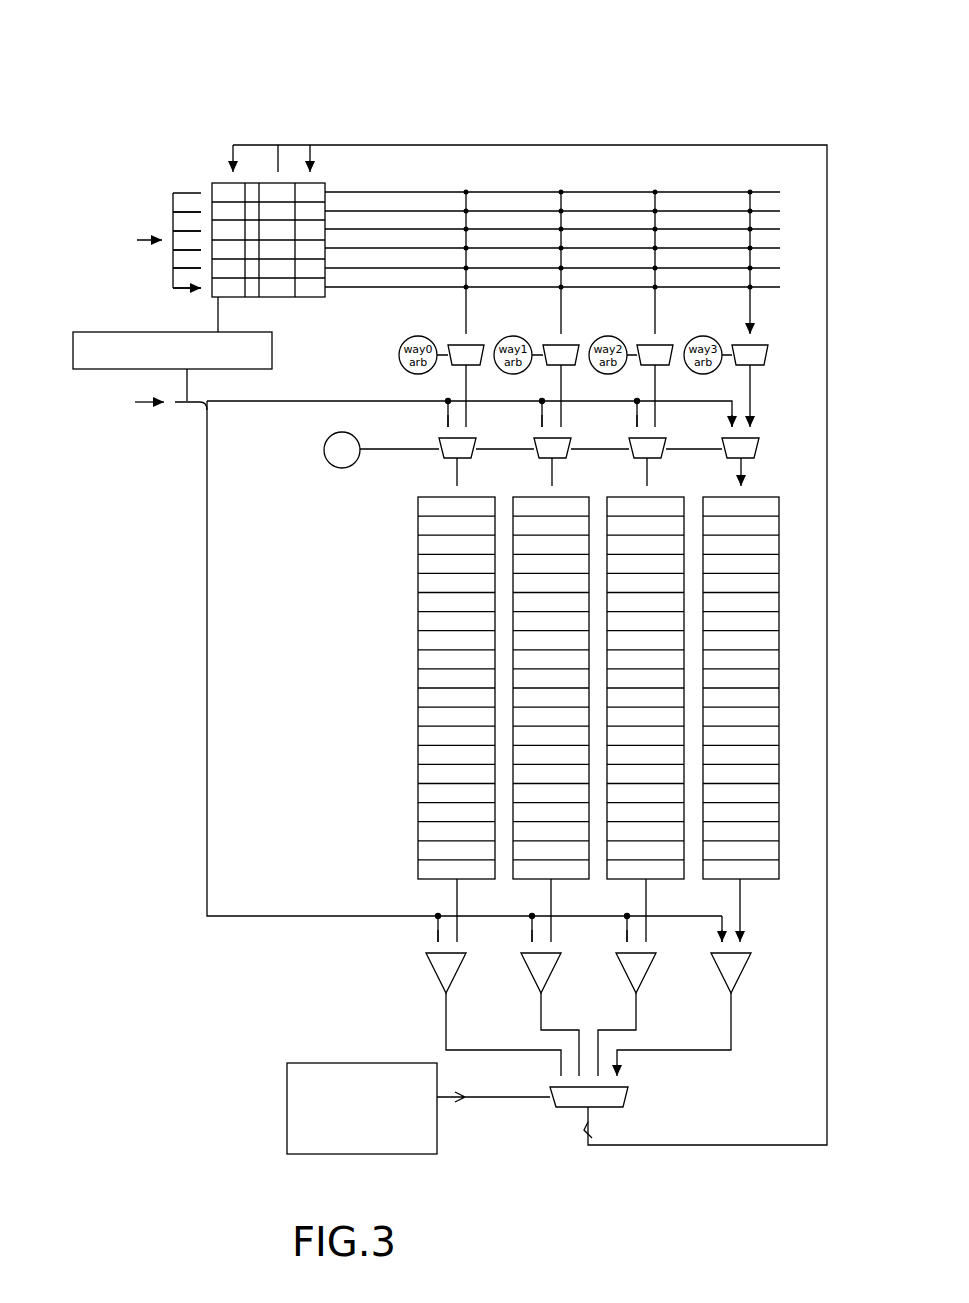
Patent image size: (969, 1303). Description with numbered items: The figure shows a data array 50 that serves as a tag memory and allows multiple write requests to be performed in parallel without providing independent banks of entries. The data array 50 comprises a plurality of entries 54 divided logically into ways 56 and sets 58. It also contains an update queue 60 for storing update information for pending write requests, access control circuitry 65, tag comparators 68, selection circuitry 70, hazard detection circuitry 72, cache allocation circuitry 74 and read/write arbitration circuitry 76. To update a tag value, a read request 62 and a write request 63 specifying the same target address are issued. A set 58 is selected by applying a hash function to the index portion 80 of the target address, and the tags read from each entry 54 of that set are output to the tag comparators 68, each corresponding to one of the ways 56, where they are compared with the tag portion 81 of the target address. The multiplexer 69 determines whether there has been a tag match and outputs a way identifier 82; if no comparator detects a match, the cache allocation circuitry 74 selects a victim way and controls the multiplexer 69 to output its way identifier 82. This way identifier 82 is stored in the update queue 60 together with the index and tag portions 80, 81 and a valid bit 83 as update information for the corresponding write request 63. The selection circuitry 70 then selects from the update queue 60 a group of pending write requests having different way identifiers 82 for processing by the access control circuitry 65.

The data array 50 is at (773, 86).
The entries 54 is at (593, 676).
The ways 56 is at (712, 495).
The sets 58 is at (765, 530).
The update queue 60 is at (213, 183).
The read request 62 is at (145, 410).
The write request 63 is at (141, 238).
The access control circuitry 65 is at (724, 447).
The tag comparators 68 is at (736, 968).
The multiplexer 69 is at (628, 1097).
The selection circuitry 70 is at (760, 342).
The hazard detection circuitry 72 is at (73, 351).
The cache allocation circuitry 74 is at (287, 1095).
The read/write arbitration circuitry 76 is at (330, 466).
The index portion 80 is at (284, 183).
The tag portion 81 is at (251, 183).
The way identifier 82 is at (320, 183).
The valid bit 83 is at (258, 183).